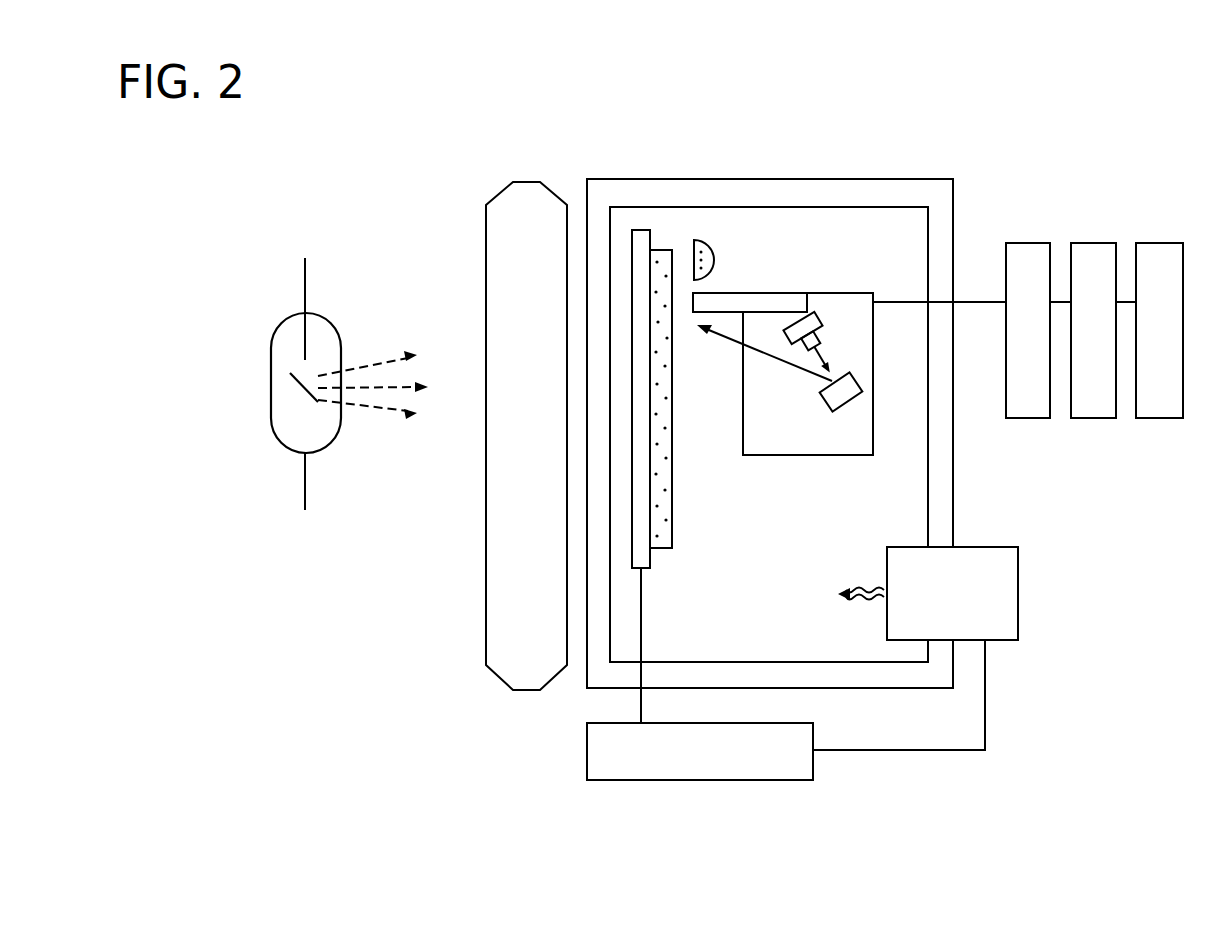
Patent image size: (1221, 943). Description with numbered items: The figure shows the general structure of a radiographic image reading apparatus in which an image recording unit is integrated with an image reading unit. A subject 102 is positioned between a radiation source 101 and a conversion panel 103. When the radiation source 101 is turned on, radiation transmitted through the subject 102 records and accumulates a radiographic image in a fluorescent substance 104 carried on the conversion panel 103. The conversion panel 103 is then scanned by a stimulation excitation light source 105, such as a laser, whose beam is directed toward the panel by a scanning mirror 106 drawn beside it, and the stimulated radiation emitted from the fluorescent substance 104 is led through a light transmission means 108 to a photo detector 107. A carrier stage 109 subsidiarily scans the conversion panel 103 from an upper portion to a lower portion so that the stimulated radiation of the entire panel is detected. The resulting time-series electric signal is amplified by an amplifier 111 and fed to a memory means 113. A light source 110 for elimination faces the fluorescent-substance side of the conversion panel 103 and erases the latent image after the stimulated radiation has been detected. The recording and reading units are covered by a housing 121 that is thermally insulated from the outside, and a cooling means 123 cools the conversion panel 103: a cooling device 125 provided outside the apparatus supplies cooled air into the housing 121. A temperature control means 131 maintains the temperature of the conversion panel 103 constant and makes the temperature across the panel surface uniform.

The radiation source 101 is at (305, 270).
The subject 102 is at (537, 192).
The conversion panel 103 is at (643, 230).
The fluorescent substance 104 is at (662, 250).
The stimulation excitation light source 105 is at (822, 340).
The scanning mirror 106 is at (827, 405).
The photo detector 107 is at (1038, 243).
The light transmission means 108 is at (742, 293).
The carrier stage 109 is at (873, 430).
The light source for elimination 110 is at (714, 250).
The amplifier 111 is at (1102, 243).
The memory means 113 is at (1169, 243).
The housing 121 is at (872, 179).
The cooling means 123 is at (887, 558).
The cooling device 125 is at (985, 547).
The temperature control means 131 is at (587, 745).